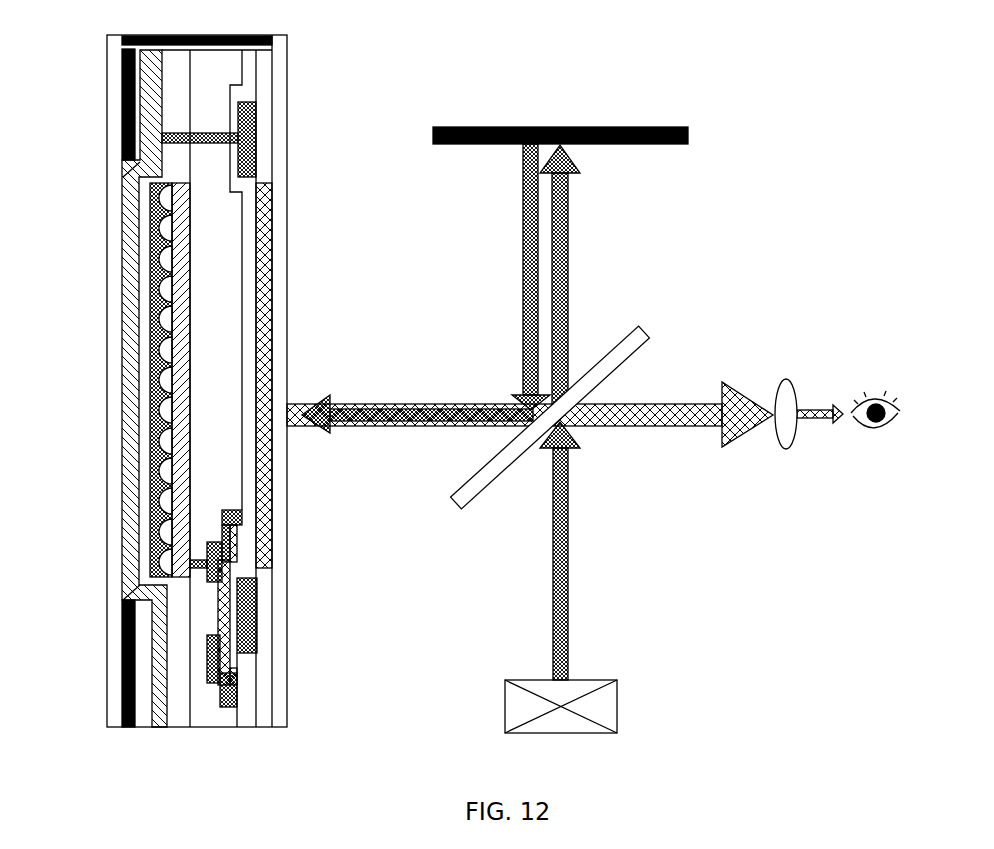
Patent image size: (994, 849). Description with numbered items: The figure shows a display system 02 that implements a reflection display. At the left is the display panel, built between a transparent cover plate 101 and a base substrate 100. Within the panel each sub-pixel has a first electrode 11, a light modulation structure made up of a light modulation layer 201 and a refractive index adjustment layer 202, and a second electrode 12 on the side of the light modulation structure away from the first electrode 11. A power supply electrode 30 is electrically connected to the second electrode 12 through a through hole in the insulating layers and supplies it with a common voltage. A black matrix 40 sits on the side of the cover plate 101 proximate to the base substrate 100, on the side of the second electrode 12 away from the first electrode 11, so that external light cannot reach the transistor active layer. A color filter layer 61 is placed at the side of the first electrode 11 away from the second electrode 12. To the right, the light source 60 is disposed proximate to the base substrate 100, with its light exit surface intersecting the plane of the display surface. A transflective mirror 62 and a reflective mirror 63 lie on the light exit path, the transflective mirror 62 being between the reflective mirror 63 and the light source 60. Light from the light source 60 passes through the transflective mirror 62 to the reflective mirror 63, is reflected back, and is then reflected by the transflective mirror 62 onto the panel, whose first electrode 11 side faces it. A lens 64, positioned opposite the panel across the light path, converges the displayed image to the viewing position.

The display system 02 is at (160, 370).
The black matrix 40 is at (122, 112).
The power supply electrode 30 is at (268, 138).
The reflective mirror 63 is at (690, 137).
The second electrode 12 is at (127, 290).
The color filter layer 61 is at (268, 245).
The refractive index adjustment layer 202 is at (153, 345).
The light modulation layer 201 is at (168, 425).
The transflective mirror 62 is at (605, 362).
The first electrode 11 is at (180, 482).
The lens 64 is at (783, 448).
The light source 60 is at (605, 706).
The cover plate 101 is at (114, 712).
The base substrate 100 is at (265, 712).